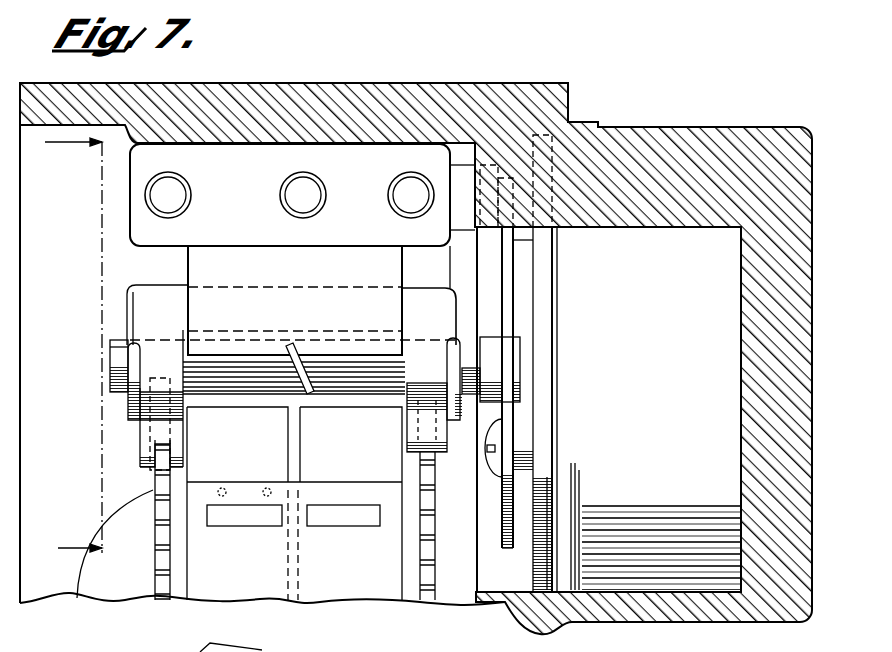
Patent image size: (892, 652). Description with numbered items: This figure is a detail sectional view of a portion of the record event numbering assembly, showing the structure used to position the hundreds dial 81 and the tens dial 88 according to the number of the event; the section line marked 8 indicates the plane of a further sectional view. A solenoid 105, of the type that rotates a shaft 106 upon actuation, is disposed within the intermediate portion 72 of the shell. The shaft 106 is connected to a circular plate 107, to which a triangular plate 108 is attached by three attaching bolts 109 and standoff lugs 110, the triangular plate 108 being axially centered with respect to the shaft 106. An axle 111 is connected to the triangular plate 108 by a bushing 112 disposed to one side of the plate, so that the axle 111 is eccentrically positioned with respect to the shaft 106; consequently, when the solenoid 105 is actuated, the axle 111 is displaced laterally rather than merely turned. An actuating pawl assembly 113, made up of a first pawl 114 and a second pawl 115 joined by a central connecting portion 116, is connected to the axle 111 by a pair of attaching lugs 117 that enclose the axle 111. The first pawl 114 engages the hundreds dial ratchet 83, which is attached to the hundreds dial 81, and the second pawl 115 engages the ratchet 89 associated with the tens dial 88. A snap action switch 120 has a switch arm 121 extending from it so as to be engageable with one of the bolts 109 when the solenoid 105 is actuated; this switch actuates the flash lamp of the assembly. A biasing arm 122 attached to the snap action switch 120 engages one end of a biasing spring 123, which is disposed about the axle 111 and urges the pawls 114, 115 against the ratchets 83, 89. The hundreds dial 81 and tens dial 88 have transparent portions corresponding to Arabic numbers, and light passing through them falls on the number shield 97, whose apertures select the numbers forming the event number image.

The intermediate portion 72 is at (322, 108).
The solenoid 105 is at (628, 230).
The section line 8- 8 is at (89, 364).
The snap action switch 120 is at (247, 145).
The switch arm 121 is at (455, 178).
The biasing arm 122 is at (188, 258).
The actuating pawl assembly 113 is at (108, 302).
The central connecting portion 116 is at (412, 303).
The biasing spring 123 is at (305, 356).
The axle 111 is at (112, 355).
The attaching lugs 117 is at (128, 407).
The first pawl 114 is at (143, 432).
The ratchet 89 is at (155, 487).
The tens dial 88 is at (193, 458).
The number shield 97 is at (200, 583).
The second pawl 115 is at (450, 432).
The hundreds dial 81 is at (407, 470).
The hundreds dial ratchet 83 is at (423, 567).
The bushing 112 is at (518, 345).
The circular plate 107 is at (543, 272).
The shaft 106 is at (553, 362).
The triangular plate 108 is at (508, 550).
The attaching bolts 109 is at (495, 435).
The standoff lugs 110 is at (525, 450).